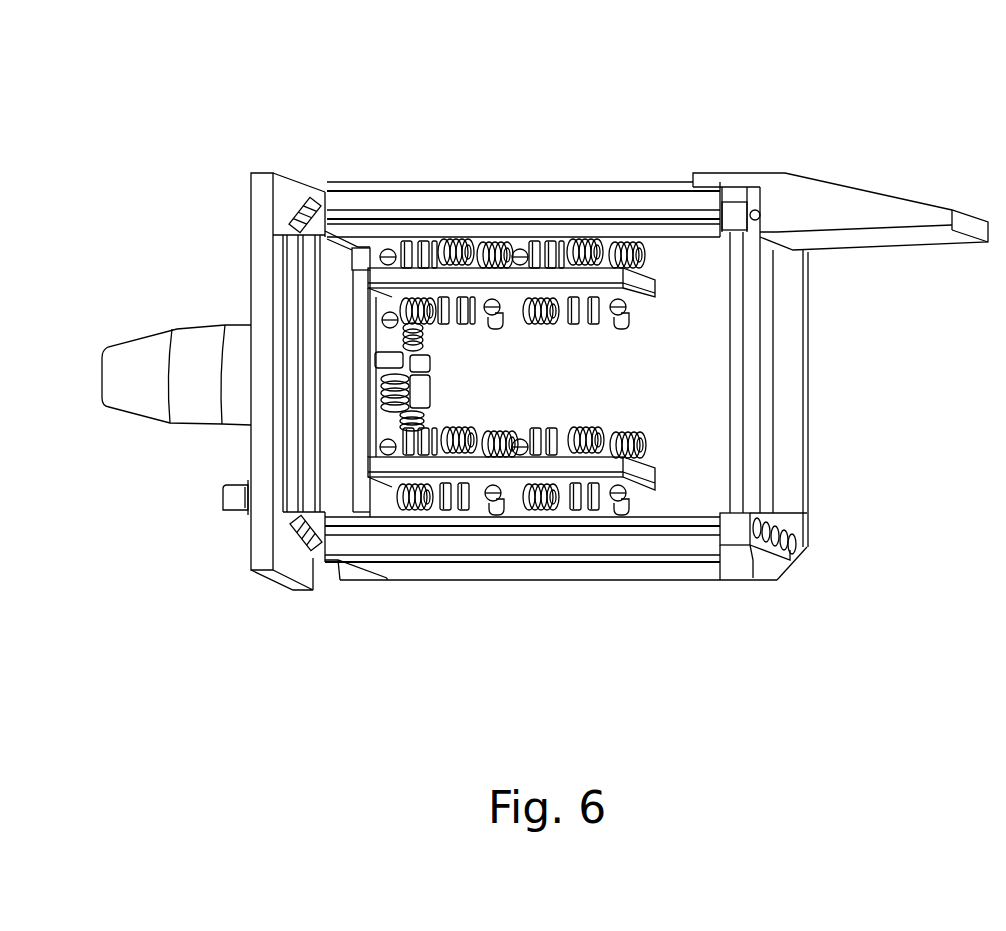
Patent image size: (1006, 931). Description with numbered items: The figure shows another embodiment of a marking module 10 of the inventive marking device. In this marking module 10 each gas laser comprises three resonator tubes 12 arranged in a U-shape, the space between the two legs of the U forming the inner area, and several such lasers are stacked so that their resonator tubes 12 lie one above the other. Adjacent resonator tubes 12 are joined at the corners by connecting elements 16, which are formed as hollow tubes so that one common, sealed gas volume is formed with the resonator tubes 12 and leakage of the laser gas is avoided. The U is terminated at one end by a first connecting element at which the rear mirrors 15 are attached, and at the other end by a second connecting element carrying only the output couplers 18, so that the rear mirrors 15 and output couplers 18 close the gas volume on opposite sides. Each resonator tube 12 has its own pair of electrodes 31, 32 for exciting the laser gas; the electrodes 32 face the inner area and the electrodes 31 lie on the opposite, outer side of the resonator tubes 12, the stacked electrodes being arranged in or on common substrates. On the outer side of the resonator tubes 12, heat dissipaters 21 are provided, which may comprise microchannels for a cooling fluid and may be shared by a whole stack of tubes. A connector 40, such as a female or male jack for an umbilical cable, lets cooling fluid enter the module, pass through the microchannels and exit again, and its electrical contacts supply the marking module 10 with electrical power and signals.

The marking module 10 is at (897, 105).
The resonator tube 12 is at (499, 213).
The rear mirror 15 is at (758, 521).
The connecting element 16 is at (306, 208).
The output coupler 18 is at (757, 200).
The heat dissipater 21 is at (579, 203).
The electrode 31 is at (487, 550).
The electrode 32 is at (446, 207).
The connector 40 is at (148, 357).